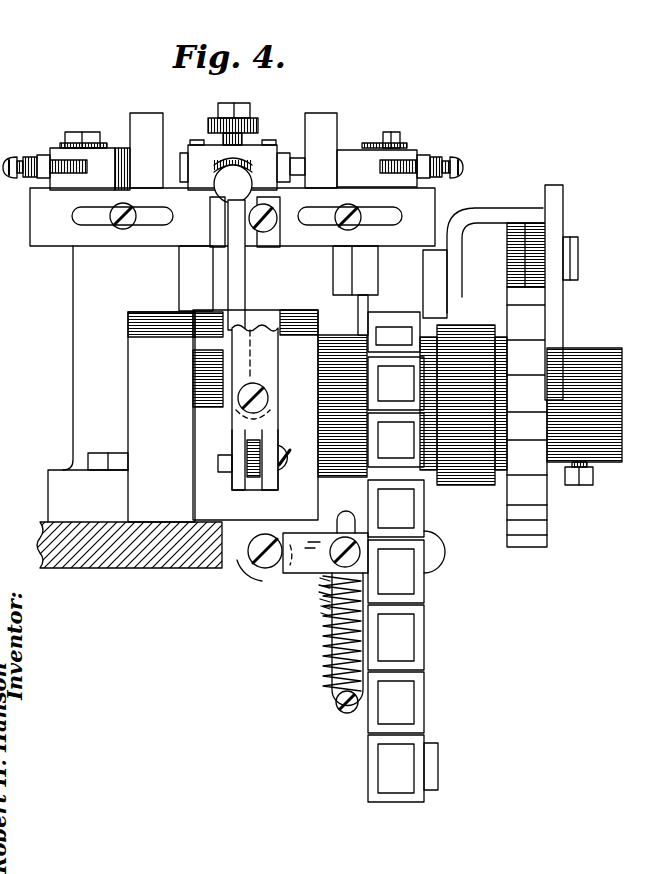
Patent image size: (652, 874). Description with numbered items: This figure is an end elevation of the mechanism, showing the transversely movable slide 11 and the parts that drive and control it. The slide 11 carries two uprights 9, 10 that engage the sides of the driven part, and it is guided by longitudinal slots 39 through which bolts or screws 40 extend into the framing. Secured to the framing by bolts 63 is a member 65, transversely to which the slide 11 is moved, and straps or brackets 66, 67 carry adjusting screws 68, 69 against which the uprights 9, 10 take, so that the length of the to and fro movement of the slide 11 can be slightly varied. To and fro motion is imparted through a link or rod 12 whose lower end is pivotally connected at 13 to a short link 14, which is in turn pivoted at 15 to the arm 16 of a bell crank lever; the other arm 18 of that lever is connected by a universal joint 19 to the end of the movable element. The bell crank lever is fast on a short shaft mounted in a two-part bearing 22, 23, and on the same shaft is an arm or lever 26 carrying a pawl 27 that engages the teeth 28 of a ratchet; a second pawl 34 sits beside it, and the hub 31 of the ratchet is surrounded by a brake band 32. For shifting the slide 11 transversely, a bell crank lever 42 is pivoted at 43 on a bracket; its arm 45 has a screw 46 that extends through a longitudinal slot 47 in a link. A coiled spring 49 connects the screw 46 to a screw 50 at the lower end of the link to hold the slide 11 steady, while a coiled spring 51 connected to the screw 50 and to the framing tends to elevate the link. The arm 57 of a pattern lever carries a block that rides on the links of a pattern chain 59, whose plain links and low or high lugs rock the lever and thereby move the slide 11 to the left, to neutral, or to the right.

The upright 9 is at (143, 130).
The upright 10 is at (316, 128).
The transversely movable slide 11 is at (176, 240).
The link or rod 12 is at (268, 355).
The pivotal connection 13 is at (268, 400).
The short link or member 14 is at (270, 423).
The pivot 15 is at (290, 450).
The arm of bell crank lever 16 is at (247, 470).
The arm of bell crank lever 18 is at (232, 268).
The universal joint 19 is at (243, 143).
The bearing part 22 is at (307, 323).
The bearing part 23 is at (143, 390).
The arm or lever 26 is at (552, 322).
The pawl 27 is at (535, 233).
The teeth of ratchet 28 is at (535, 530).
The hub of ratchet 31 is at (503, 472).
The brake band 32 is at (463, 486).
The second pawl 34 is at (535, 240).
The longitudinal slot 39 is at (95, 225).
The bolt or screw 40 is at (125, 225).
The bell crank lever 42 is at (260, 568).
The pivot 43 is at (264, 533).
The arm of bell crank lever 45 is at (444, 548).
The screw 46 is at (338, 550).
The longitudinal slot 47 is at (346, 519).
The coiled spring 49 is at (340, 647).
The screw 50 is at (336, 703).
The coiled spring 51 is at (318, 594).
The arm of lever 57 is at (343, 262).
The pattern chain 59 is at (430, 587).
The bolt 63 is at (74, 135).
The member 65 is at (345, 150).
The strap or bracket 66 is at (33, 158).
The strap or bracket 67 is at (430, 165).
The adjusting screw 68 is at (62, 160).
The adjusting screw 69 is at (402, 163).